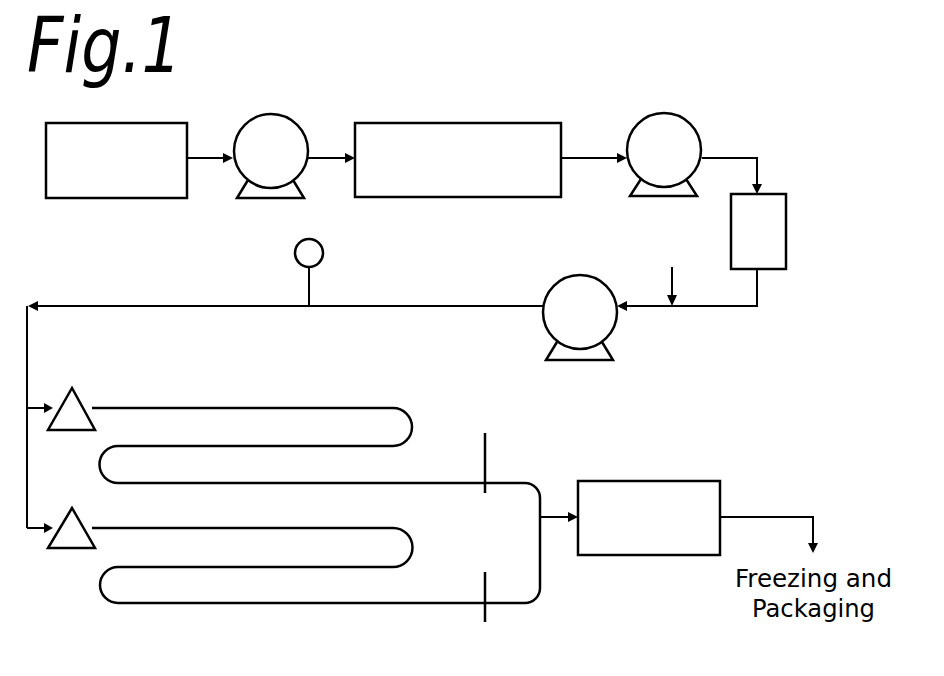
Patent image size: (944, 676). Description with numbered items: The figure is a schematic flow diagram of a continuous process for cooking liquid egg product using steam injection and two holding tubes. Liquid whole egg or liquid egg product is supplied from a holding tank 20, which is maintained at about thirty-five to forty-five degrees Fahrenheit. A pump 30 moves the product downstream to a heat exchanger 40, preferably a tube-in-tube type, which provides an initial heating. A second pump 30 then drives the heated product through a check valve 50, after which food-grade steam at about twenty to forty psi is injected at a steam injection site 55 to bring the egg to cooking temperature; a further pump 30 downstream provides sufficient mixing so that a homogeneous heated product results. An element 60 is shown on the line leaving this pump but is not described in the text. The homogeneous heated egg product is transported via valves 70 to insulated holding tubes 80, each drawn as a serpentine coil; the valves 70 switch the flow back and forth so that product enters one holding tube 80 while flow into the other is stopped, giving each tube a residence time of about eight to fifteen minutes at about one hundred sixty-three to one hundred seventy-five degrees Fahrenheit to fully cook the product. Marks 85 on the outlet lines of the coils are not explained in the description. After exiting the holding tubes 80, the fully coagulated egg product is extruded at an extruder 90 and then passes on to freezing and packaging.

The holding tank 20 is at (104, 172).
The pump 30 is at (258, 166).
The heat exchanger 40 is at (445, 171).
The check valve 50 is at (745, 231).
The steam injection site 55 is at (670, 283).
The pressure gauge / sensor 60 is at (296, 260).
The valve 70 is at (72, 388).
The holding tubes 80 is at (410, 413).
The valve / cut point 85 is at (487, 456).
The extruder 90 is at (636, 531).